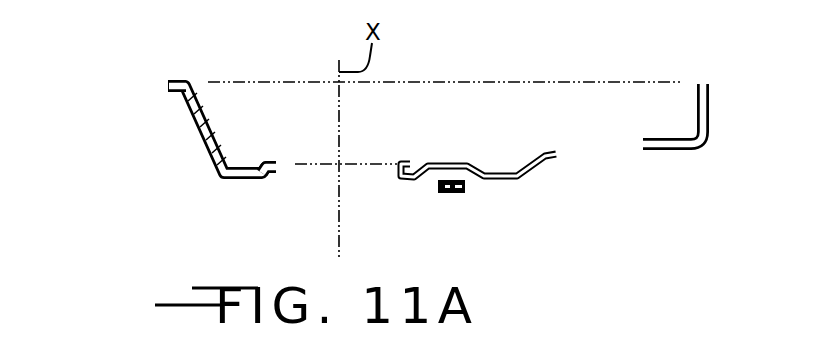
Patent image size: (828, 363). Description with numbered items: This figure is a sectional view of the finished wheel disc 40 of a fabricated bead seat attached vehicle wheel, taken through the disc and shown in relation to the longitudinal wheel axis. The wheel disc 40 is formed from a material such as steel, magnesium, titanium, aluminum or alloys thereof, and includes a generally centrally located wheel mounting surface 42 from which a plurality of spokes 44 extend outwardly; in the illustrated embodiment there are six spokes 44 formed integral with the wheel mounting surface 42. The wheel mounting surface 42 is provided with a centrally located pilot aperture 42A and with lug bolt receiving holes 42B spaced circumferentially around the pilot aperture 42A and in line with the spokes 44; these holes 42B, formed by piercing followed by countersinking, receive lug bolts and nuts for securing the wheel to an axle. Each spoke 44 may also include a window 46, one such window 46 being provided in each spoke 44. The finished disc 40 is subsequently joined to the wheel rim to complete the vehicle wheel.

The wheel disc 40 is at (478, 61).
The wheel mounting surface 42 is at (248, 181).
The pilot aperture 42A is at (280, 170).
The lug bolt receiving holes 42B is at (456, 162).
The spokes 44 is at (183, 93).
The windows 46 is at (640, 142).